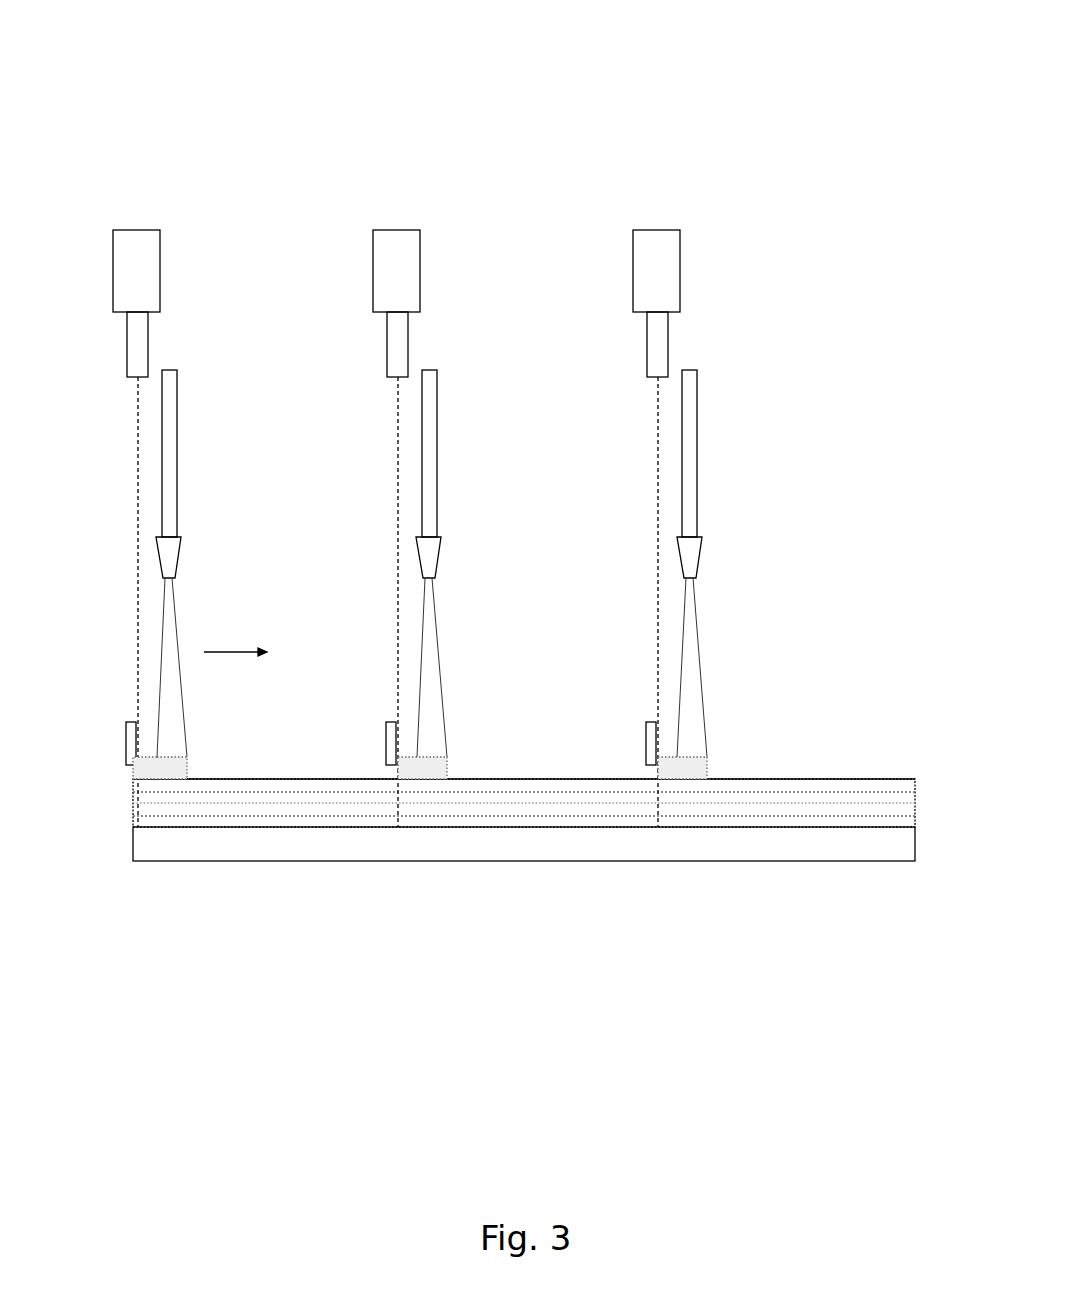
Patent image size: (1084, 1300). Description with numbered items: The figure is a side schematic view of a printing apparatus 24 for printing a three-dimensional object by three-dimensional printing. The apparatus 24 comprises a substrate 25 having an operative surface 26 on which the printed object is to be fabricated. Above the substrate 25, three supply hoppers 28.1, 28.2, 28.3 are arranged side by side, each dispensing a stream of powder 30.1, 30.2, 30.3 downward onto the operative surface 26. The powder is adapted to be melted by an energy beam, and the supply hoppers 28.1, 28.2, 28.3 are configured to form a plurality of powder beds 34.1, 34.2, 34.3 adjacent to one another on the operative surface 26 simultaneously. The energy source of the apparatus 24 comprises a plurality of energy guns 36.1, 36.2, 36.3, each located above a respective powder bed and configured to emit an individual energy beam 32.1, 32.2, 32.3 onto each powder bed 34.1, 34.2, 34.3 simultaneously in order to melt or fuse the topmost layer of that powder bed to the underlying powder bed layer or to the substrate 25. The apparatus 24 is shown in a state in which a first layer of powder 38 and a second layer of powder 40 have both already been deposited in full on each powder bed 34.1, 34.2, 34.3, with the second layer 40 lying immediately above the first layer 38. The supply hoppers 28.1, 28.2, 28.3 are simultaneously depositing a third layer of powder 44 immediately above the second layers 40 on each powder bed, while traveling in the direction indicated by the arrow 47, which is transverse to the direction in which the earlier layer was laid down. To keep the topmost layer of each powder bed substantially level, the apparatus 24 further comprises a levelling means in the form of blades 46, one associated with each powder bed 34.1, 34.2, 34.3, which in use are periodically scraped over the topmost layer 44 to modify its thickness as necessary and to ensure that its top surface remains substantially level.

The printing apparatus 24 is at (698, 95).
The substrate 25 is at (521, 842).
The operative surface 26 is at (885, 827).
The supply hopper 28.1 is at (170, 457).
The supply hopper 28.2 is at (430, 427).
The supply hopper 28.3 is at (698, 420).
The powder 30.1 is at (175, 615).
The powder 30.2 is at (435, 615).
The powder 30.3 is at (697, 615).
The energy beam 32.1 is at (139, 438).
The energy beam 32.2 is at (399, 447).
The energy beam 32.3 is at (658, 466).
The powder bed 34.1 is at (280, 787).
The powder bed 34.2 is at (538, 787).
The powder bed 34.3 is at (800, 785).
The energy gun 36.1 is at (152, 240).
The energy gun 36.2 is at (405, 240).
The energy gun 36.3 is at (658, 240).
The first layer of powder 38 is at (243, 818).
The second layer of powder 40 is at (343, 790).
The third layer of powder 44 is at (168, 766).
The blade 46 is at (126, 748).
The direction of travel 47 is at (235, 640).